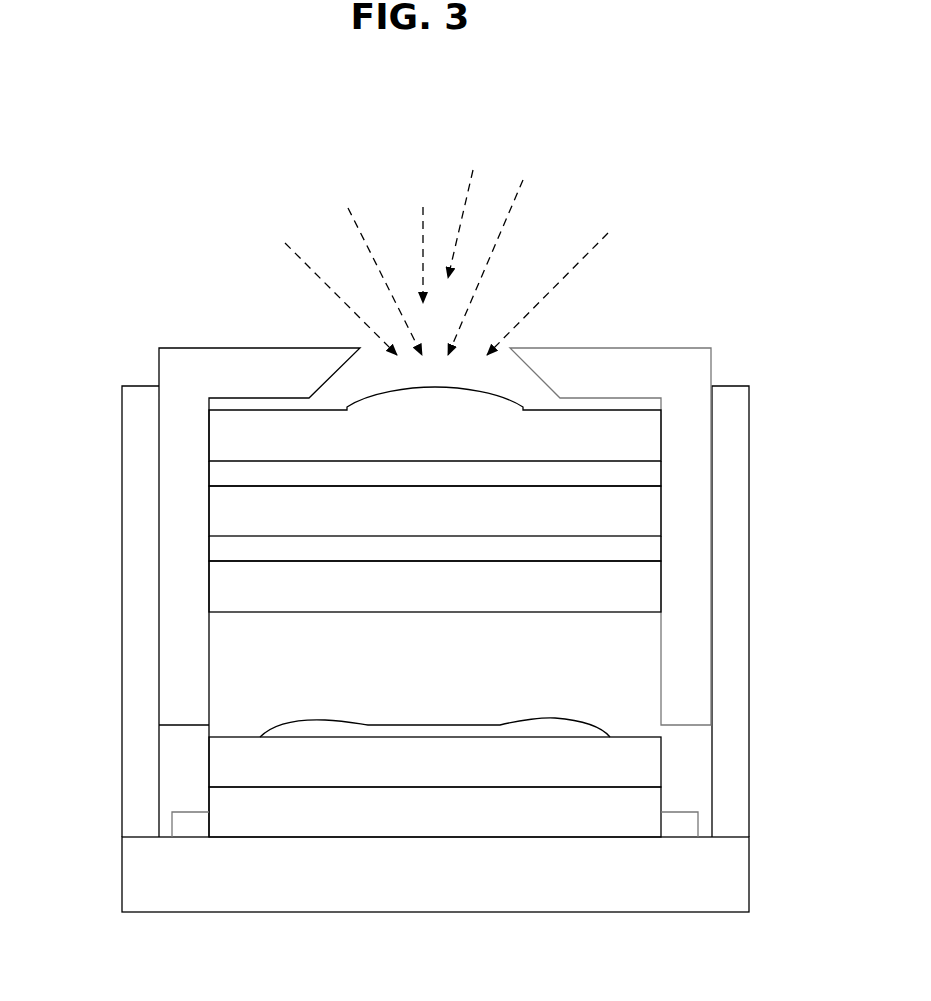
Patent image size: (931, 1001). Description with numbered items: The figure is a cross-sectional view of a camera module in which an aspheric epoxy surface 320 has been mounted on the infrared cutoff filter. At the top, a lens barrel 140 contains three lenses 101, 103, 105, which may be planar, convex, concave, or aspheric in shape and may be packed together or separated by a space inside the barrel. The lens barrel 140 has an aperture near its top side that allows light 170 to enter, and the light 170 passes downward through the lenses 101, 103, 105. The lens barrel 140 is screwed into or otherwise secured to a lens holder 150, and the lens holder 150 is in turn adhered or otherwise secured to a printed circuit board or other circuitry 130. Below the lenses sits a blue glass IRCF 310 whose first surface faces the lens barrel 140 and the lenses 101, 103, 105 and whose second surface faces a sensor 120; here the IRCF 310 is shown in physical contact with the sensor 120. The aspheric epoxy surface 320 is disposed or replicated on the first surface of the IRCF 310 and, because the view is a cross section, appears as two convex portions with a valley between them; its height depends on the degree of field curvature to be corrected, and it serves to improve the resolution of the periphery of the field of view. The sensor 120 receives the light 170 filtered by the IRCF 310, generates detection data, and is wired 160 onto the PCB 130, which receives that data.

The lens 101 is at (435, 424).
The lens 103 is at (435, 511).
The lens 105 is at (435, 586).
The sensor 120 is at (435, 812).
The printed circuit board 130 is at (435, 874).
The lens barrel 140 is at (235, 372).
The lens holder 150 is at (145, 498).
The wiring 160 is at (197, 812).
The light 170 is at (446, 259).
The IRCF 310 is at (435, 762).
The aspheric epoxy surface 320 is at (345, 733).